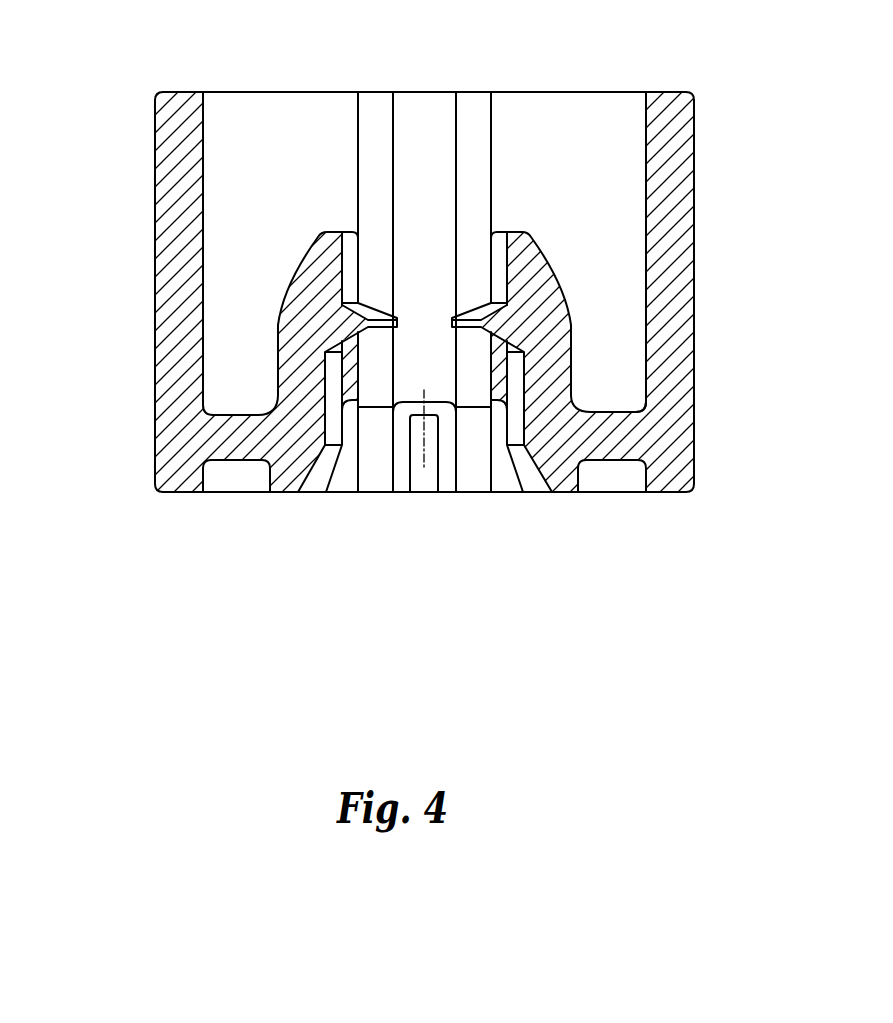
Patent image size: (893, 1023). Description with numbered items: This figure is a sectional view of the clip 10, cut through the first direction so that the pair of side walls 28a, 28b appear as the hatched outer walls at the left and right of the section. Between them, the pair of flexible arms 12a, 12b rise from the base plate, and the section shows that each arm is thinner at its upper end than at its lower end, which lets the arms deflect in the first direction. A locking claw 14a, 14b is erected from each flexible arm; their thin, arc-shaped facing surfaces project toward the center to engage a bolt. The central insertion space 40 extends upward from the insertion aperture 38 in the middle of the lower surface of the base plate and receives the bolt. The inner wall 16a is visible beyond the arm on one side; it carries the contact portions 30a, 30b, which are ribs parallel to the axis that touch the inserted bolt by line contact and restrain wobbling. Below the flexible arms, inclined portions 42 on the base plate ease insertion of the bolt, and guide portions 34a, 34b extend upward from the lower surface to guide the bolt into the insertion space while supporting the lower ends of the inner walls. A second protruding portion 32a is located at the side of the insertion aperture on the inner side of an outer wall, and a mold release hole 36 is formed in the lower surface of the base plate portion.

The clip 10 is at (412, 645).
The flexible arm 12a is at (547, 368).
The flexible arm 12b is at (312, 278).
The locking claw 14a is at (495, 326).
The locking claw 14b is at (342, 355).
The inner wall 16a is at (563, 118).
The side wall 28a is at (668, 174).
The side wall 28b is at (180, 178).
The contact portion 30a is at (477, 112).
The contact portion 30b is at (372, 112).
The second protruding portion 32a is at (417, 477).
The guide portion 34a is at (473, 477).
The guide portion 34b is at (377, 477).
The mold release hole 36 is at (240, 478).
The insertion aperture 38 is at (540, 477).
The insertion space 40 is at (419, 301).
The inclined portion 42 is at (318, 477).